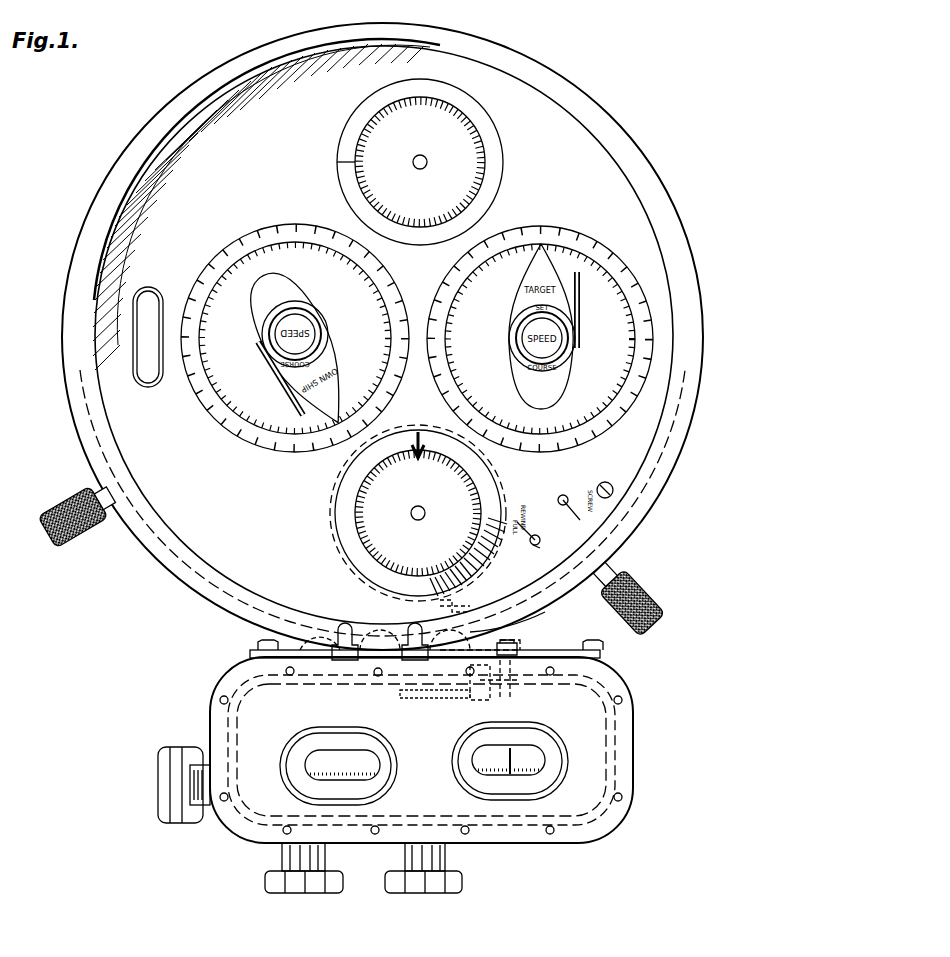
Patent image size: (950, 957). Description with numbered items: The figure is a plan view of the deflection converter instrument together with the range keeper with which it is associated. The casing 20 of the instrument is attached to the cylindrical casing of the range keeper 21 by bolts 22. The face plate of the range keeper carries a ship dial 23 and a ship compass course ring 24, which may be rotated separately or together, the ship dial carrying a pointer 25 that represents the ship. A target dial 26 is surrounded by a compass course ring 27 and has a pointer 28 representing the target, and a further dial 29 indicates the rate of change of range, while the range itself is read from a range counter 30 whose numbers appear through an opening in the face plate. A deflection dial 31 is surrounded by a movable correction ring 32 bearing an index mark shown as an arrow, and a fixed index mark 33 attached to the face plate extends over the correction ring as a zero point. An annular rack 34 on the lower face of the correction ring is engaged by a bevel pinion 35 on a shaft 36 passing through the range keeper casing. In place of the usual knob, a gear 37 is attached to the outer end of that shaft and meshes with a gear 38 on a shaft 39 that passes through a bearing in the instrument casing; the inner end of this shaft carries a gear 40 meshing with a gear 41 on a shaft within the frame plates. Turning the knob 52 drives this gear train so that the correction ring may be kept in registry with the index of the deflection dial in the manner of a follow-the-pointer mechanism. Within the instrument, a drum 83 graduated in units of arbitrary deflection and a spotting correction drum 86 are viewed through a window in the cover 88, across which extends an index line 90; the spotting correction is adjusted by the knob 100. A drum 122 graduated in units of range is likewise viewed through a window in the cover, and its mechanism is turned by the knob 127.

The casing of the instrument 20 is at (235, 685).
The range keeper 21 is at (130, 245).
The bolts 22 is at (420, 648).
The ship dial 23 is at (238, 388).
The ship compass course ring 24 is at (228, 412).
The pointer 25 is at (335, 380).
The target dial 26 is at (610, 338).
The compass course ring 27 is at (620, 305).
The pointer 28 is at (528, 285).
The dial 29 is at (470, 165).
The range counter 30 is at (150, 285).
The deflection dial 31 is at (355, 475).
The correction ring 32 is at (348, 494).
The fixed index mark 33 is at (345, 517).
The annular rack 34 is at (480, 590).
The bevel pinion 35 is at (458, 600).
The shaft 36 is at (505, 637).
The gear 37 is at (560, 648).
The gear 38 is at (518, 648).
The shaft 39 is at (515, 690).
The gear 40 is at (486, 693).
The gear 41 is at (405, 698).
The knob 52 is at (425, 885).
The drum 83 is at (545, 758).
The spotting correction drum 86 is at (525, 772).
The cover 88 is at (626, 731).
The index line 90 is at (512, 774).
The knob 100 is at (163, 812).
The drum 122 is at (318, 770).
The knob 127 is at (305, 885).